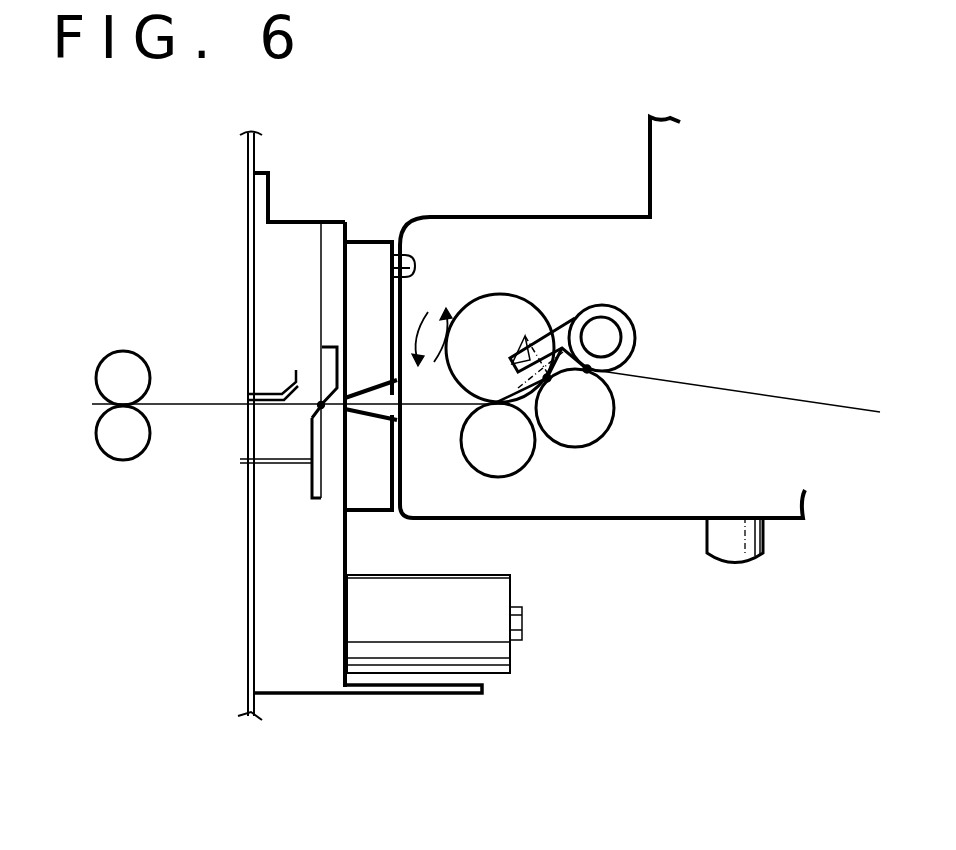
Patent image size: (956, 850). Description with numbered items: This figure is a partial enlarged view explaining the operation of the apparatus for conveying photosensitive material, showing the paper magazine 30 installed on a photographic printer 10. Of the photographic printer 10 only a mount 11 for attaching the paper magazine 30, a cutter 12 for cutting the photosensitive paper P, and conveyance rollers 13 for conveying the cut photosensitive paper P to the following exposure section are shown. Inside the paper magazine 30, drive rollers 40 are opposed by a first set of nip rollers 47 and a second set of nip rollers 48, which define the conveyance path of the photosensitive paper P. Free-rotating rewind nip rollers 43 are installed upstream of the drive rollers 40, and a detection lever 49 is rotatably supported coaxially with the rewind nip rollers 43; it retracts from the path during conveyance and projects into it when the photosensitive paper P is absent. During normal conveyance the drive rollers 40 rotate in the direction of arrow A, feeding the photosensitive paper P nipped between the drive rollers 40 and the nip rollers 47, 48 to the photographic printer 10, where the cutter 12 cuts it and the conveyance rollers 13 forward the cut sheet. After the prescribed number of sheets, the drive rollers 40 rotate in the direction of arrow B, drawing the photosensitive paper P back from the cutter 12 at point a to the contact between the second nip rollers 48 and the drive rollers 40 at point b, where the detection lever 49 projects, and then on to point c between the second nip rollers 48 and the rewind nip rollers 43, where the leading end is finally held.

The photographic printer 10 is at (262, 192).
The mount 11 is at (380, 498).
The cutter 12 is at (332, 420).
The conveyance rollers 13 is at (160, 440).
The paper magazine 30 is at (668, 503).
The drive rollers 40 is at (514, 306).
The rewind nip rollers 43 is at (636, 320).
The first set of nip rollers 47 is at (480, 455).
The second set of nip rollers 48 is at (600, 424).
The detection lever 49 is at (534, 351).
The arrow A is at (440, 337).
The arrow B is at (396, 336).
The photosensitive paper P is at (804, 400).
The point a is at (319, 404).
The point b is at (548, 382).
The point c is at (588, 374).